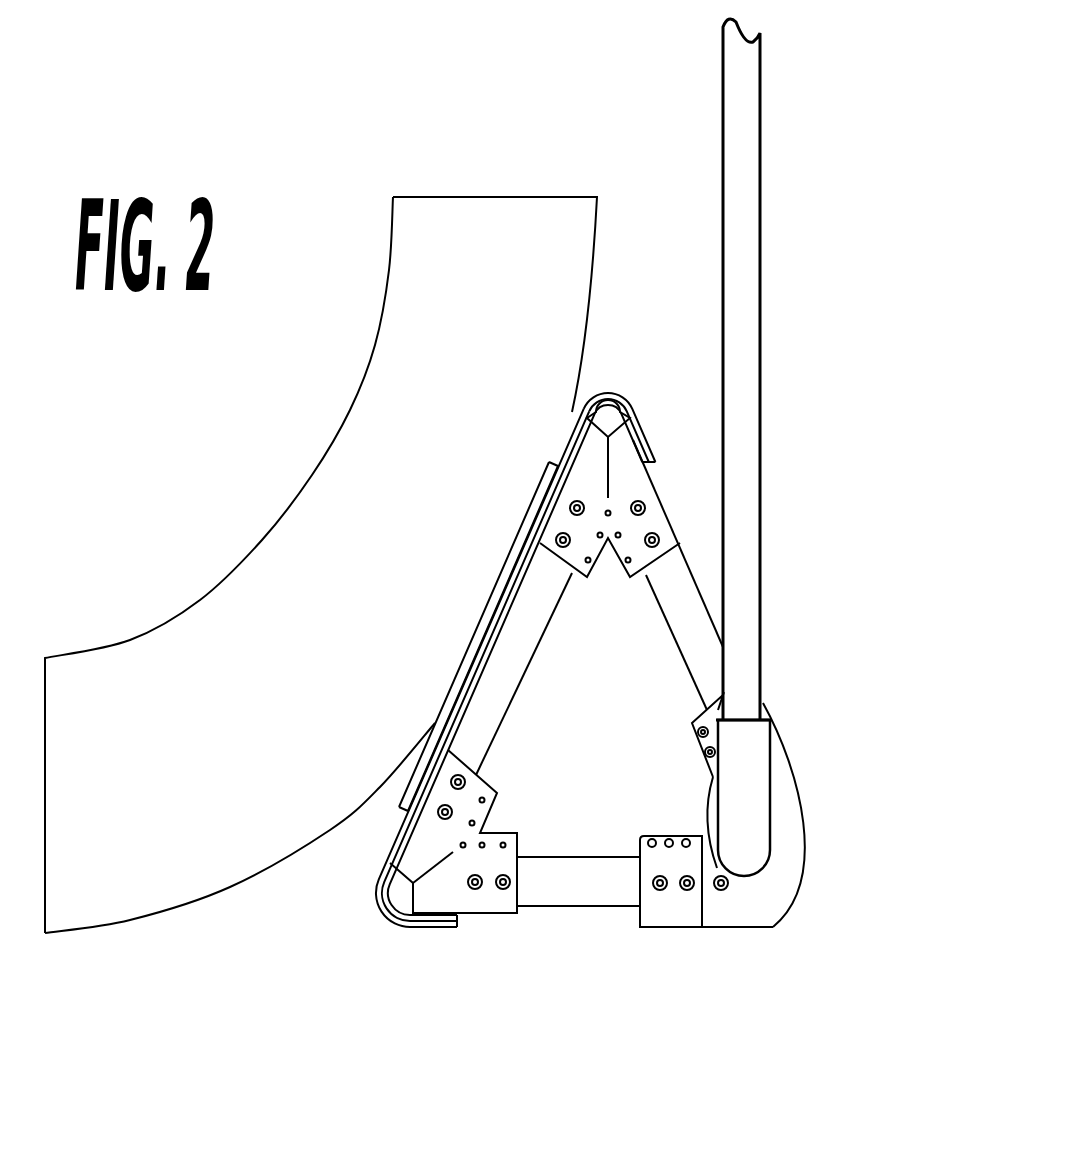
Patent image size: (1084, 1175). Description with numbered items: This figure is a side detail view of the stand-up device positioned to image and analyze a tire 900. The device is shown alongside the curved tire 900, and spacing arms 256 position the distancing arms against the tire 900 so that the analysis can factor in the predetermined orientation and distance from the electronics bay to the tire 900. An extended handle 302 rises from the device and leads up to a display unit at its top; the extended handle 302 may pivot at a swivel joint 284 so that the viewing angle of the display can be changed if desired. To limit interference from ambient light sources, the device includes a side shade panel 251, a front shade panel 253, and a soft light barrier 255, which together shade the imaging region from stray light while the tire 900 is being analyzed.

The tire 900 is at (268, 745).
The extended handle 302 is at (769, 259).
The side shade panel 251 is at (597, 691).
The front shade panel 253 is at (476, 648).
The soft light barrier 255 is at (518, 528).
The spacing arms 256 is at (694, 601).
The swivel joint 284 is at (754, 856).